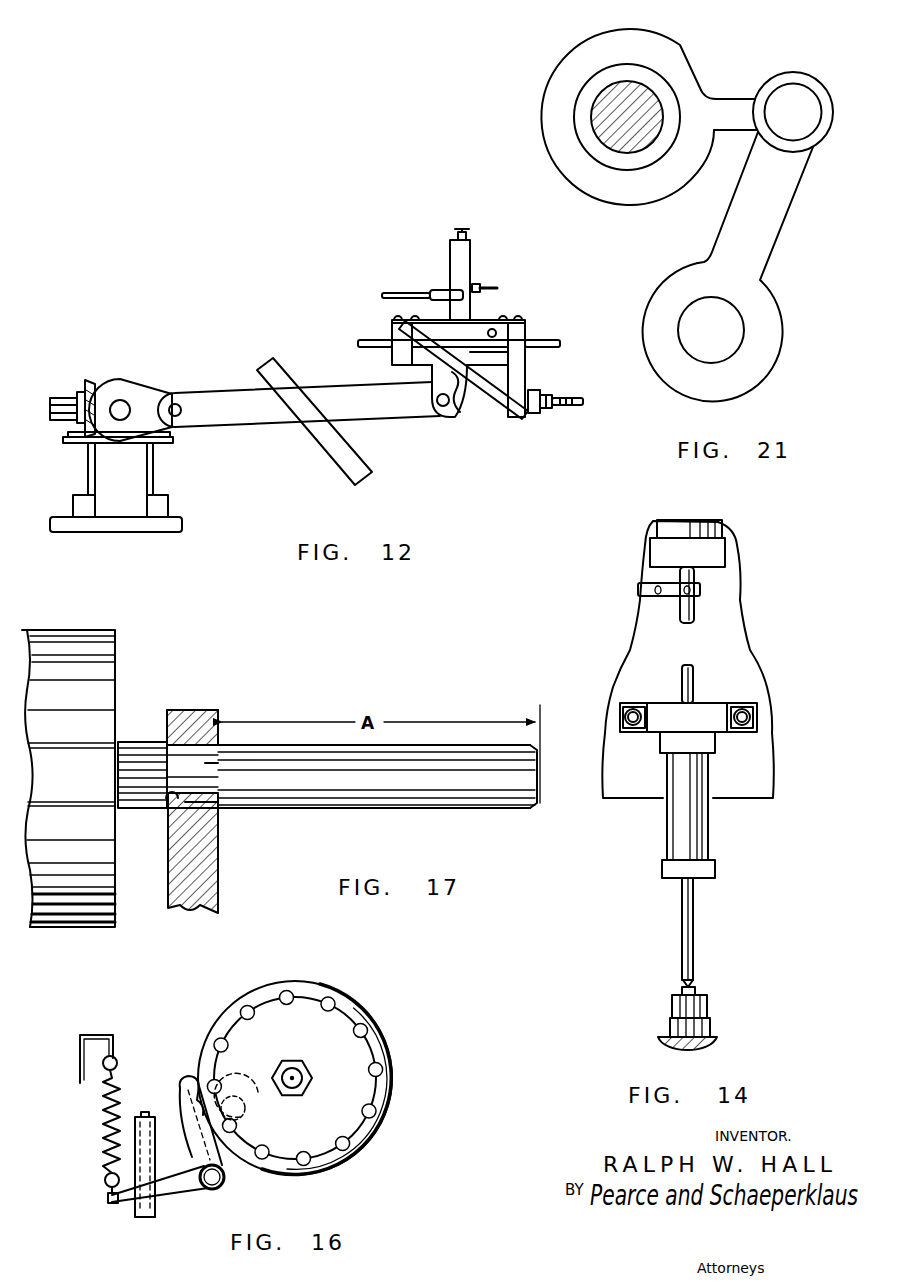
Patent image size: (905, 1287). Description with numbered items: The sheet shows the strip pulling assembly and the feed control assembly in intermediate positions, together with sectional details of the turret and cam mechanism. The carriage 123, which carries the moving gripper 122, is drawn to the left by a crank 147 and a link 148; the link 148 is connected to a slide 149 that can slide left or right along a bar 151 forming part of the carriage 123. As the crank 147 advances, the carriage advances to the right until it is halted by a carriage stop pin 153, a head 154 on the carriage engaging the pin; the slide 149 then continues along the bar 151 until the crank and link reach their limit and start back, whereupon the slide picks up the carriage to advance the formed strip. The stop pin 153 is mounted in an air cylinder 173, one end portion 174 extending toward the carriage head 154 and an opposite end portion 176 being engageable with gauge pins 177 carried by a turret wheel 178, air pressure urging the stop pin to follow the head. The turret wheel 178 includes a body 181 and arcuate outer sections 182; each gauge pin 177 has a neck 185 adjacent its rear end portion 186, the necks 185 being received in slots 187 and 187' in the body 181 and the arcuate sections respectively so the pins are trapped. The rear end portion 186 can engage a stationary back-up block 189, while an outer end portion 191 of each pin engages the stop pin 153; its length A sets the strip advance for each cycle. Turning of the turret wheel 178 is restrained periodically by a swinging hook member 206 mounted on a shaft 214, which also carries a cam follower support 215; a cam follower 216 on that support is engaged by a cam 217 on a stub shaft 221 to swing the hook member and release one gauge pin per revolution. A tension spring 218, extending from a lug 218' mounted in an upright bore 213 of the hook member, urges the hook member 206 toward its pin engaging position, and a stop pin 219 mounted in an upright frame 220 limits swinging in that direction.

In FIG. 12, the moving gripper 122 is at (467, 258).
In FIG. 12, the carriage 123 is at (467, 333).
In FIG. 14, the carriage 123 is at (693, 1050).
In FIG. 12, the crank 147 is at (124, 388).
In FIG. 12, the link 148 is at (222, 413).
In FIG. 12, the slide 149 is at (456, 388).
In FIG. 12, the bar 151 is at (503, 368).
In FIG. 12, the carriage stop pin 153 is at (575, 407).
In FIG. 14, the carriage stop pin 153 is at (699, 920).
In FIG. 14, the head 154 is at (697, 991).
In FIG. 14, the air cylinder 173 is at (700, 843).
In FIG. 14, the end portion of stop pin 174 is at (695, 966).
In FIG. 14, the opposite end portion of stop pin 176 is at (710, 682).
In FIG. 17, the gauge pins 177 is at (462, 816).
In FIG. 16, the gauge pins 177 is at (367, 1036).
In FIG. 14, the gauge pins 177 is at (695, 618).
In FIG. 17, the turret wheel 178 is at (193, 706).
In FIG. 16, the turret wheel 178 is at (362, 1003).
In FIG. 14, the turret wheel 178 is at (640, 588).
In FIG. 17, the body 181 is at (220, 895).
In FIG. 16, the body 181 is at (300, 1010).
In FIG. 17, the arcuate outer sections 182 is at (202, 720).
In FIG. 16, the arcuate outer sections 182 is at (263, 993).
In FIG. 17, the neck 185 is at (222, 802).
In FIG. 17, the rear end portion 186 is at (142, 742).
In FIG. 17, the slot 187 is at (151, 816).
In FIG. 17, the slot 187' is at (250, 760).
In FIG. 17, the stationary back-up block 189 is at (100, 650).
In FIG. 17, the outer end portion 191 is at (539, 749).
In FIG. 16, the swinging hook member 206 is at (180, 1077).
In FIG. 16, the upright bore 213 is at (107, 1198).
In FIG. 21, the hook member shaft 214 is at (723, 348).
In FIG. 16, the hook member shaft 214 is at (222, 1187).
In FIG. 21, the cam follower support 215 is at (769, 237).
In FIG. 16, the cam follower support 215 is at (200, 1165).
In FIG. 21, the cam follower 216 is at (787, 94).
In FIG. 21, the cam 217 is at (694, 99).
In FIG. 16, the cam 217 is at (234, 1069).
In FIG. 16, the tension spring 218 is at (86, 1121).
In FIG. 16, the lug 218' is at (82, 1213).
In FIG. 16, the stop pin 219 is at (157, 1208).
In FIG. 16, the upright frame 220 is at (143, 1218).
In FIG. 21, the stub shaft 221 is at (631, 85).